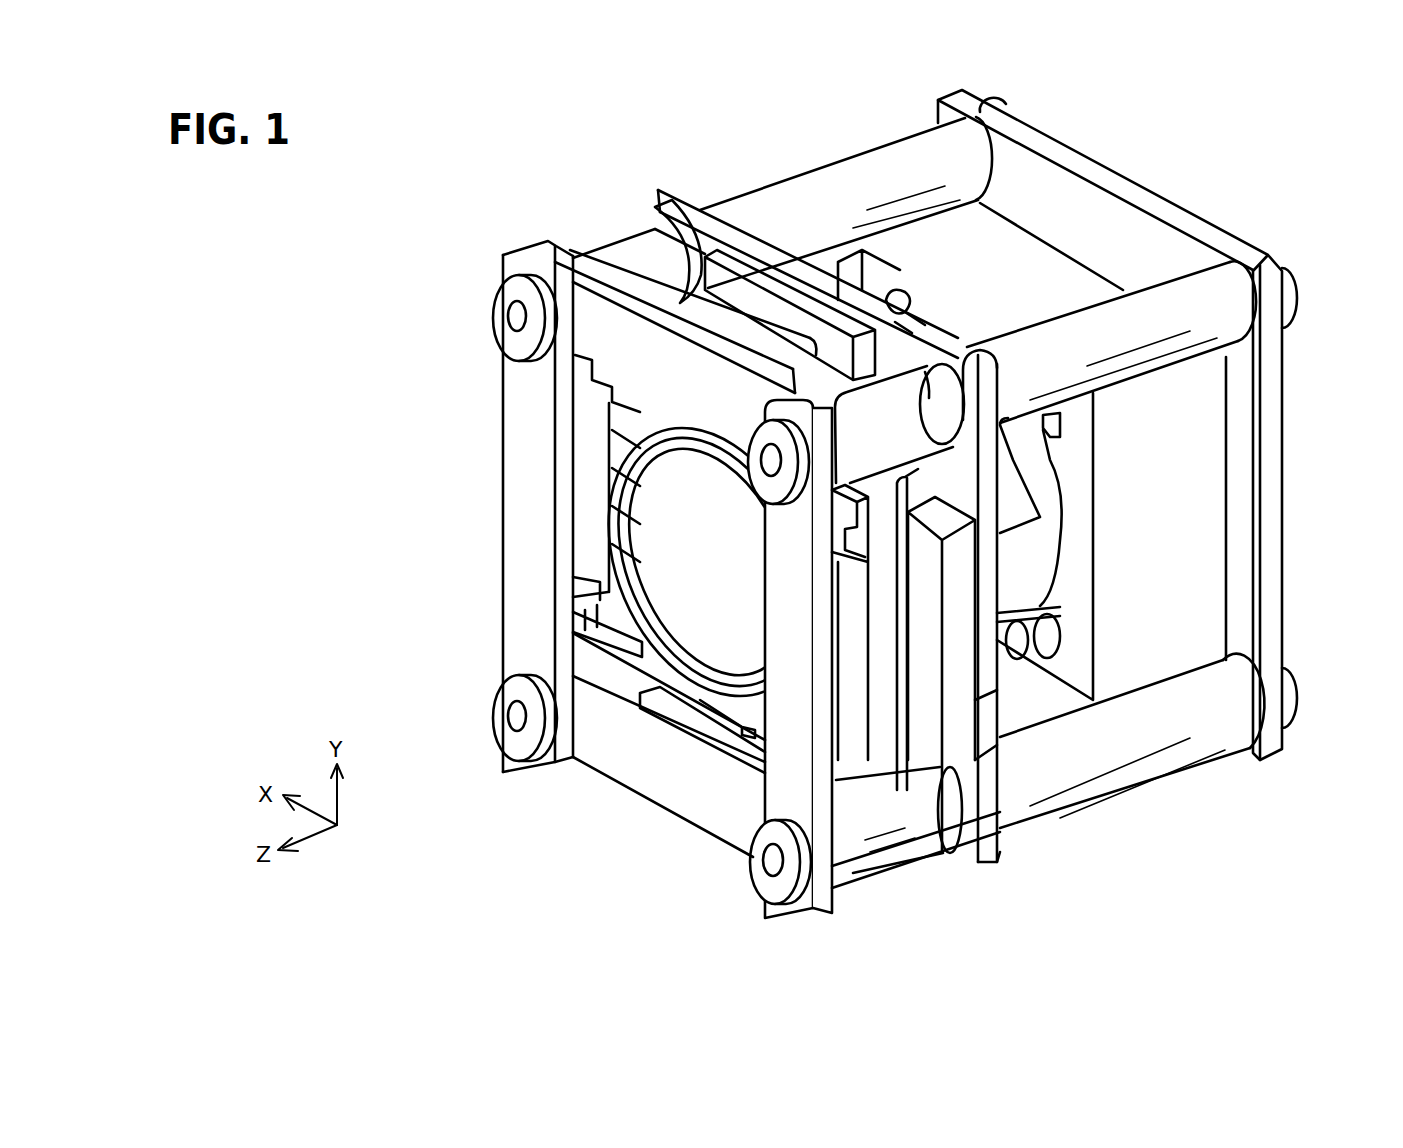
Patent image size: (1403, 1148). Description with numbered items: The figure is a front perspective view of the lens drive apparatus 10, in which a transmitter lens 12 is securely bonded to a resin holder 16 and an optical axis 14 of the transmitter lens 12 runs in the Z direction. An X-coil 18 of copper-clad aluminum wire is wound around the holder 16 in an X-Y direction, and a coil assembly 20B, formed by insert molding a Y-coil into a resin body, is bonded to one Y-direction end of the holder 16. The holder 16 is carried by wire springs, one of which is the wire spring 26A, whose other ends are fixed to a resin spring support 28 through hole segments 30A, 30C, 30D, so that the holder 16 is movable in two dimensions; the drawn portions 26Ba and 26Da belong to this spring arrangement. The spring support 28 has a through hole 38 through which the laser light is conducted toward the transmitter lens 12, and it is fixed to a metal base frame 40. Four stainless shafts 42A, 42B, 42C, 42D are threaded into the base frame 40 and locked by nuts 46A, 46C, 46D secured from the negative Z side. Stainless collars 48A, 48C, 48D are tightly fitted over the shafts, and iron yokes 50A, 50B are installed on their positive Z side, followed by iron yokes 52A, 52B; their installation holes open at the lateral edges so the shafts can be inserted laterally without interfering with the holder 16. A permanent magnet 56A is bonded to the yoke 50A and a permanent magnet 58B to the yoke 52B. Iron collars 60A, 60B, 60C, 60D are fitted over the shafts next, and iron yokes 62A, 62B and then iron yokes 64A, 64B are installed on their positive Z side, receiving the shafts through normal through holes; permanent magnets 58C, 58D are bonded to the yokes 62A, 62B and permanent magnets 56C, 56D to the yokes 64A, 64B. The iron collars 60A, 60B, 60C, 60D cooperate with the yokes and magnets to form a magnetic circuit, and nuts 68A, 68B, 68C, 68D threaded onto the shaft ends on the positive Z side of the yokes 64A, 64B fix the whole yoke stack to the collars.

The lens drive apparatus 10 is at (572, 881).
The transmitter lens 12 is at (665, 525).
The optical axis 14 is at (498, 650).
The holder 16 is at (545, 667).
The X-coil 18 is at (888, 618).
The coil assembly 20B is at (826, 262).
The wire spring 26A is at (1028, 662).
The lower engaging portion 26Ba is at (652, 650).
The upper engaging portion 26Da is at (656, 412).
The spring support 28 is at (1215, 405).
The hole segment 30A is at (1060, 640).
The hole segment 30C is at (1060, 420).
The hole segment 30D is at (904, 296).
The through hole 38 is at (1052, 505).
The base frame 40 is at (1163, 208).
The shaft 42A is at (765, 865).
The shaft 42B is at (515, 717).
The shaft 42C is at (762, 466).
The shaft 42D is at (515, 319).
The nut 46A is at (1297, 700).
The nut 46C is at (1297, 300).
The nut 46D is at (1014, 106).
The collar 48A is at (1162, 770).
The collar 48C is at (1055, 328).
The collar 48D is at (836, 170).
The yoke 50A is at (997, 850).
The yoke 50B is at (700, 190).
The yoke 52A is at (954, 866).
The yoke 52B is at (997, 396).
The permanent magnet 56A is at (1002, 740).
The permanent magnet 56C is at (865, 772).
The permanent magnet 56D is at (555, 578).
The permanent magnet 58B is at (762, 262).
The permanent magnet 58C is at (684, 744).
The permanent magnet 58D is at (690, 233).
The collar 60A is at (884, 870).
The collar 60B is at (620, 688).
The collar 60C is at (972, 345).
The collar 60D is at (630, 241).
The yoke 62A is at (668, 805).
The yoke 62B is at (598, 296).
The yoke 64A is at (765, 806).
The yoke 64B is at (505, 508).
The nut 68A is at (768, 892).
The nut 68B is at (516, 752).
The nut 68C is at (798, 460).
The nut 68D is at (500, 298).